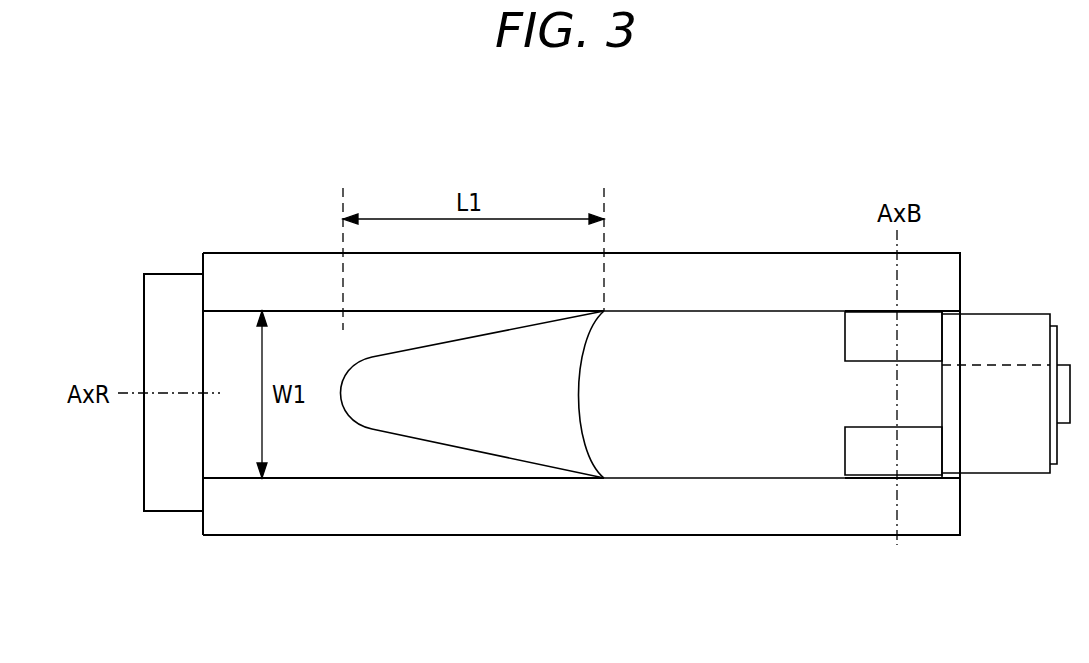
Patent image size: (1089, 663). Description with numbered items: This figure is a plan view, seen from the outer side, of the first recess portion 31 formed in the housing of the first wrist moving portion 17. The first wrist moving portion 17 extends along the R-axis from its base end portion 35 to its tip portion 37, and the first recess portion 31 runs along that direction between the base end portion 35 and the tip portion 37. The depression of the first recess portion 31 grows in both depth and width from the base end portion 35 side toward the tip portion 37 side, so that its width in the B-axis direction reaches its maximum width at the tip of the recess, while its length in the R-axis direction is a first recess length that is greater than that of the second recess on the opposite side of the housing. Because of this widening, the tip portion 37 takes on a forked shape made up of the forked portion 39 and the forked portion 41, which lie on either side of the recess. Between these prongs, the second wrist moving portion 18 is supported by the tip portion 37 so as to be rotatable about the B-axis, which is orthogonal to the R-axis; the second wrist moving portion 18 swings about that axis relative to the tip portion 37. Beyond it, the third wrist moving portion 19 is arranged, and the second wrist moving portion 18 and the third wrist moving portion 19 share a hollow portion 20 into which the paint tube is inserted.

The first wrist moving portion 17 is at (164, 233).
The second wrist moving portion 18 is at (1018, 328).
The third wrist moving portion 19 is at (1055, 345).
The hollow portion 20 is at (1010, 425).
The first recess portion 31 is at (535, 392).
The base end portion 35 is at (270, 547).
The tip portion 37 is at (934, 547).
The forked portion 39 is at (755, 268).
The forked portion 41 is at (742, 510).